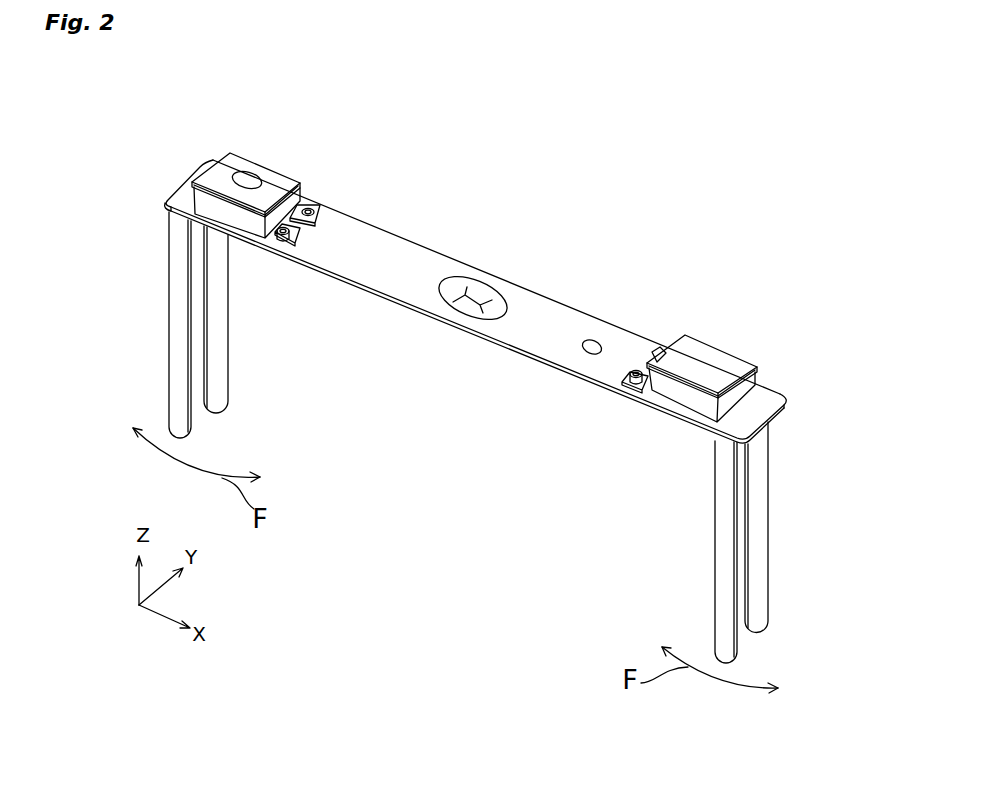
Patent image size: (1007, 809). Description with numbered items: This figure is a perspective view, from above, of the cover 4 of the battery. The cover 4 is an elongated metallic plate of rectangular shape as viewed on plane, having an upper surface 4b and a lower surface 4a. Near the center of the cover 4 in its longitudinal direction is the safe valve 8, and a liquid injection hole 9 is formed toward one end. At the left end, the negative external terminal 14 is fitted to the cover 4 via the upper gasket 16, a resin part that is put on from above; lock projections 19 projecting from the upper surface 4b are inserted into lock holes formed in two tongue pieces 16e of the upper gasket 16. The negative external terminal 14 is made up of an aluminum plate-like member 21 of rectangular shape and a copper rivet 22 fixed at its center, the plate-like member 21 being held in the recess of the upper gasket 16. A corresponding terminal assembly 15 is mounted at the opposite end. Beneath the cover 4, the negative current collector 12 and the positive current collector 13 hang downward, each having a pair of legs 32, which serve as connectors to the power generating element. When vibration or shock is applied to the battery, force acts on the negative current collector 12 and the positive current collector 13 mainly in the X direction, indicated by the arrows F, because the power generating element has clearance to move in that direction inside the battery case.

The cover 4 is at (429, 287).
The lower surface 4a is at (165, 216).
The upper surface 4b is at (342, 230).
The safe valve 8 is at (480, 287).
The liquid injection hole 9 is at (592, 342).
The negative current collector 12 is at (172, 290).
The positive current collector 13 is at (770, 500).
The negative external terminal 14 is at (261, 153).
The second terminal unit 15 is at (693, 353).
The upper gasket 16 is at (304, 187).
The tongue pieces 16e is at (294, 243).
The lock projections 19 is at (282, 240).
The plate-like member 21 is at (246, 142).
The rivet 22 is at (256, 147).
The legs 32 is at (463, 437).